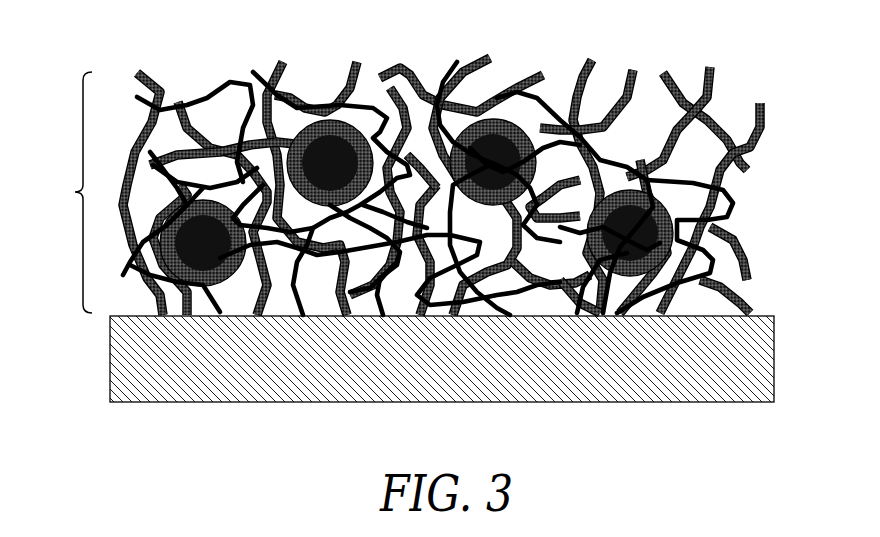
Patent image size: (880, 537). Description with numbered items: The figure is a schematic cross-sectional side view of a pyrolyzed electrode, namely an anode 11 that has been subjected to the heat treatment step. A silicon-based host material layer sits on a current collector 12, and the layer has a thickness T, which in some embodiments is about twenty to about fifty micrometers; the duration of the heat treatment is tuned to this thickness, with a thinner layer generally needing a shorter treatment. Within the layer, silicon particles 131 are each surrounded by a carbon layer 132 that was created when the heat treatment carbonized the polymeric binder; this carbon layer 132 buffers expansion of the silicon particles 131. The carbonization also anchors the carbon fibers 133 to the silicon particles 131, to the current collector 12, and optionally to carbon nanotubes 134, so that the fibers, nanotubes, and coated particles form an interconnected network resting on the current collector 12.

The anode 11 is at (486, 170).
The current collector 12 is at (120, 362).
The silicon particles 131 is at (510, 140).
The carbon layer 132 is at (577, 133).
The carbon fibers 133 is at (760, 127).
The carbon nanotubes 134 is at (733, 205).
The thickness T is at (75, 192).